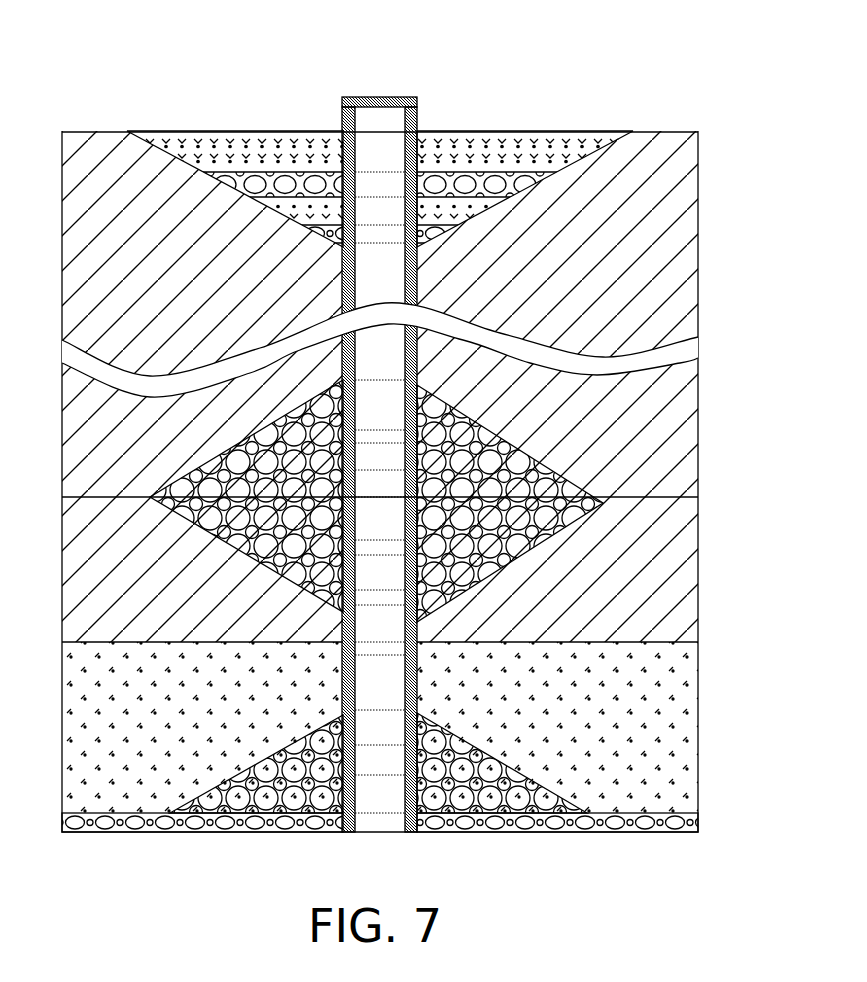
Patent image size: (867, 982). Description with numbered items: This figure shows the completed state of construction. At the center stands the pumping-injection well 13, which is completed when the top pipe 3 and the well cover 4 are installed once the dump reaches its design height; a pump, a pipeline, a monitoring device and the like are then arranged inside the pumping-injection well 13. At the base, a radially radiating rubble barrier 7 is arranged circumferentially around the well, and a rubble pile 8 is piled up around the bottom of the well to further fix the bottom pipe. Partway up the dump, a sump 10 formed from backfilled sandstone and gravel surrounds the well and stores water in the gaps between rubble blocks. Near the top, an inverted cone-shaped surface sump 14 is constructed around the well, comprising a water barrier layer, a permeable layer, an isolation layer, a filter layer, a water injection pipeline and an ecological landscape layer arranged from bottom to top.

The top pipe 3 is at (418, 118).
The well cover 4 is at (380, 100).
The rubble barrier 7 is at (673, 823).
The rubble pile 8 is at (553, 808).
The sump 10 is at (557, 477).
The pumping-injection well 13 is at (388, 198).
The surface sump 14 is at (490, 130).